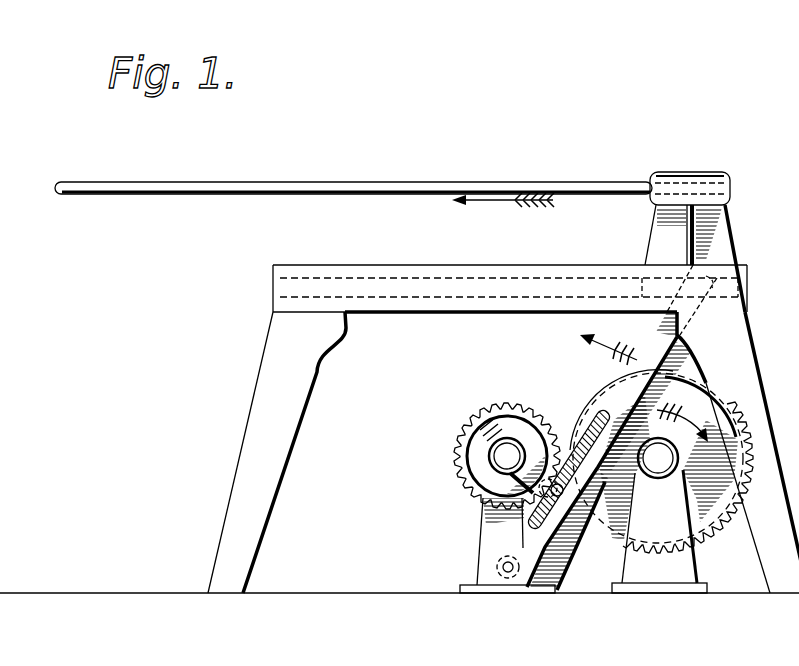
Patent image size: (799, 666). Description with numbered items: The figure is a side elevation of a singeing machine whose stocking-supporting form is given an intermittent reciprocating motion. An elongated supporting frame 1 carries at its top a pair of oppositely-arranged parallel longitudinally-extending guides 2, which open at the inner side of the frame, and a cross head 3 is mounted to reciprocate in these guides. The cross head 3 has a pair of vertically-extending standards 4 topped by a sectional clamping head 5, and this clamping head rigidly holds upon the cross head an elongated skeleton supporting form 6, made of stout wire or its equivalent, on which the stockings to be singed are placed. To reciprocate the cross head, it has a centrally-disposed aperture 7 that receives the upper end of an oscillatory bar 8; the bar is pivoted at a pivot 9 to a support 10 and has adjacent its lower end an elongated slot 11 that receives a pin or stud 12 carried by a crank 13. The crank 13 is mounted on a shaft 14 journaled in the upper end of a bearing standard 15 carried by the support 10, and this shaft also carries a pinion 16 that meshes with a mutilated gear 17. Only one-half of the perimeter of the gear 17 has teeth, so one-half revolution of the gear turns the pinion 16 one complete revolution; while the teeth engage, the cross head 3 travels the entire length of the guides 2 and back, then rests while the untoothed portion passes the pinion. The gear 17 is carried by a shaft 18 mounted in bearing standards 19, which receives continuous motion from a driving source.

The supporting frame 1 is at (278, 402).
The guides 2 is at (512, 312).
The cross head 3 is at (648, 290).
The standards 4 is at (730, 203).
The sectional clamping head 5 is at (733, 178).
The skeleton supporting form 6 is at (363, 188).
The aperture 7 is at (713, 288).
The oscillatory bar 8 is at (650, 343).
The pivot 9 is at (497, 564).
The support 10 is at (549, 574).
The elongated slot 11 is at (562, 498).
The pin or stud 12 is at (484, 510).
The crank 13 is at (553, 470).
The shaft 14 is at (502, 461).
The bearing standard 15 is at (485, 533).
The pinion 16 is at (466, 427).
The mutilated gear 17 is at (717, 527).
The shaft 18 is at (657, 479).
The bearing standards 19 is at (659, 531).